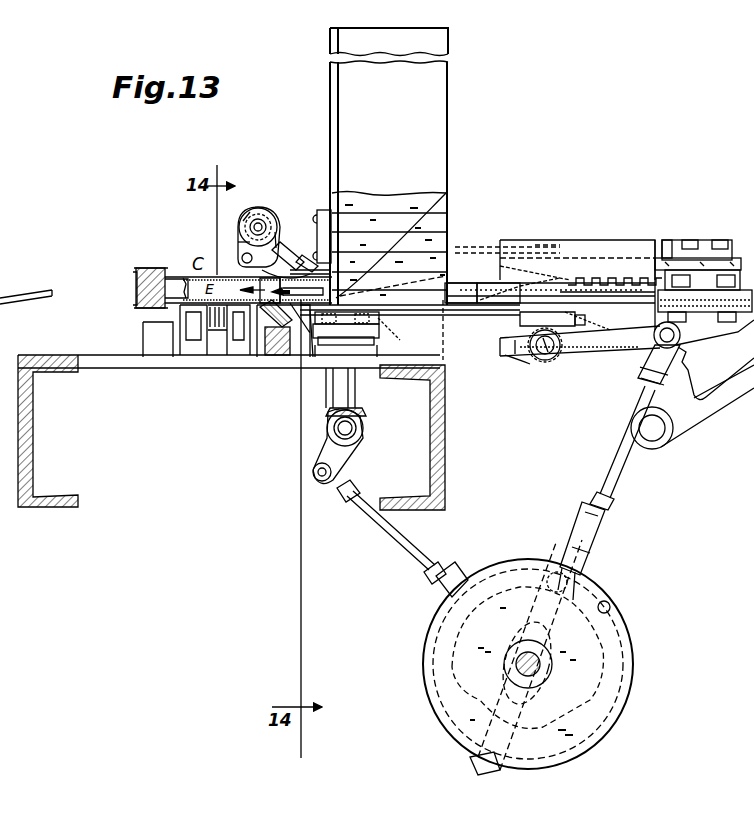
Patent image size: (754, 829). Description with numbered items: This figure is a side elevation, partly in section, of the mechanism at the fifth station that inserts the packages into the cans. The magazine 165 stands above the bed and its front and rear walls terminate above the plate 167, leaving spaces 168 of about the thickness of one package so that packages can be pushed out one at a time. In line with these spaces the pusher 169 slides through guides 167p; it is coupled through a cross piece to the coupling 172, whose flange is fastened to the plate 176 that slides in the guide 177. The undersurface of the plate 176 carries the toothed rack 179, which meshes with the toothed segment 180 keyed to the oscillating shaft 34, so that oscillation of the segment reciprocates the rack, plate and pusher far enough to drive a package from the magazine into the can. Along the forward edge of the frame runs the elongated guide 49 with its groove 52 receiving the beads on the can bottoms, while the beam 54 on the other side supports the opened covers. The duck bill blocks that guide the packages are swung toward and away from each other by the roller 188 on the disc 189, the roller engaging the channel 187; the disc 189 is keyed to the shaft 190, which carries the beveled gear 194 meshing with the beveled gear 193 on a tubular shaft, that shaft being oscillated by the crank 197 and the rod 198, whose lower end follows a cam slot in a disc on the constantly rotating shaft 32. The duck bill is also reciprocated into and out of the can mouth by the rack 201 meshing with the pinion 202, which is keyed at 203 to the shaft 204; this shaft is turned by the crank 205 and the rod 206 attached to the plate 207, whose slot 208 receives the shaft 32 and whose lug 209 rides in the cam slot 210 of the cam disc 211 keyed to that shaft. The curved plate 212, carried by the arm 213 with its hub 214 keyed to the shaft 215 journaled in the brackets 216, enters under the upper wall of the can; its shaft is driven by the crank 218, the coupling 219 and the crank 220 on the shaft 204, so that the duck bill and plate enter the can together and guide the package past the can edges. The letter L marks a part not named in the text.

The magazine 165 is at (452, 137).
The spaces 168 is at (352, 292).
The curved plate 212 is at (304, 258).
The arm 213 is at (272, 204).
The brackets 216 is at (285, 228).
The hub 214 is at (250, 215).
The shaft 215 is at (256, 228).
The crank 218 is at (238, 242).
The plate 167 is at (445, 316).
The guides 167p is at (520, 250).
The groove 52 is at (152, 266).
The elongated guide 49 is at (134, 268).
The coupling 219 is at (415, 314).
The pusher 169 is at (574, 250).
The toothed rack 179 is at (636, 286).
The guide 177 is at (548, 246).
The plate 176 is at (662, 244).
The coupling 172 is at (708, 244).
The crank 205 is at (600, 358).
The rack 201 is at (525, 340).
The shaft 204 is at (548, 352).
The key 203 is at (540, 360).
The pinion 202 is at (530, 366).
The crank 220 is at (612, 328).
The roller 188 is at (385, 332).
The rod 206 is at (610, 463).
The plate 207 is at (590, 556).
The oscillating shaft 34 is at (655, 434).
The toothed segment 180 is at (748, 392).
The cam disc 211 is at (628, 707).
The slot 208 is at (550, 640).
The constantly rotating shaft 32 is at (536, 668).
The lug 209 is at (568, 580).
The cam slot 210 is at (612, 606).
The beam 54 is at (272, 355).
The latch L is at (266, 318).
The channel 187 is at (320, 334).
The disc 189 is at (412, 437).
The shaft 190 is at (340, 385).
The beveled gear 194 is at (366, 416).
The beveled gear 193 is at (358, 442).
The crank 197 is at (325, 452).
The rod 198 is at (400, 552).